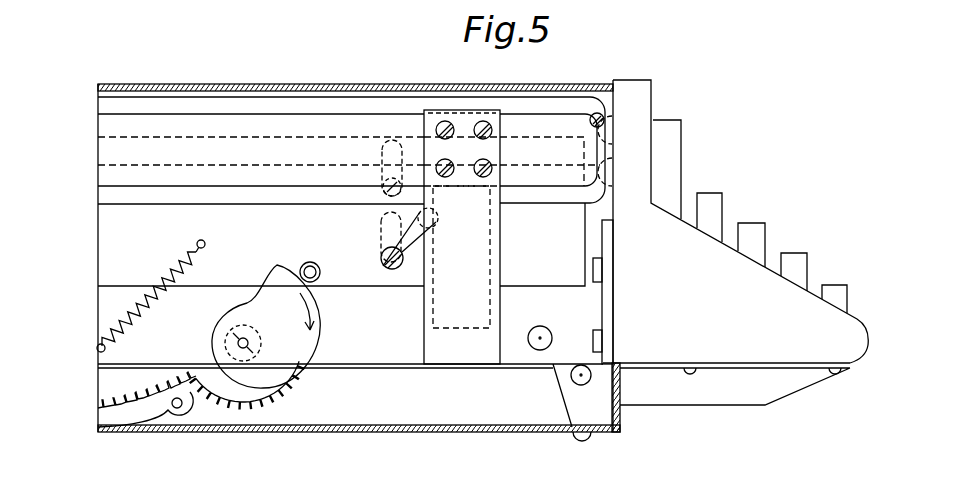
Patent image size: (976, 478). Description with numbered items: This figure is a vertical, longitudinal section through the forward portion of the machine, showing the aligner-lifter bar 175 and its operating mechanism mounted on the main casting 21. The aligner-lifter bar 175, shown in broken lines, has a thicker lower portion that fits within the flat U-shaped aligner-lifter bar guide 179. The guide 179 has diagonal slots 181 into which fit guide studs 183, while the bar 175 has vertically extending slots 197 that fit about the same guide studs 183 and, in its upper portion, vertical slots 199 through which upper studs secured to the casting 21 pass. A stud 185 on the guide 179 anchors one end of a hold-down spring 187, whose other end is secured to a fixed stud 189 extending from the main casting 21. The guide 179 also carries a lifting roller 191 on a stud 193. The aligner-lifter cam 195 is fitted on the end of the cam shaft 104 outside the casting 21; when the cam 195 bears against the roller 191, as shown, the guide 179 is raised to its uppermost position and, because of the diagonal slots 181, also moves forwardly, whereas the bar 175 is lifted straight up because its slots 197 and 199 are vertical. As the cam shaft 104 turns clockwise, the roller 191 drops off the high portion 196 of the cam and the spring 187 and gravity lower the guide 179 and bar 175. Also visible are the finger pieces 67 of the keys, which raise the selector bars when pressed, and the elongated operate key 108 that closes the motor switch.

The main casting 21 is at (113, 290).
The finger piece 67 is at (750, 225).
The cam shaft 104 is at (241, 348).
The operate key 108 is at (838, 287).
The aligner-lifter bar 175 is at (557, 135).
The aligner-lifter bar guide 179 is at (563, 246).
The diagonal slots 181 is at (412, 263).
The guide studs 183 is at (386, 270).
The stud 185 is at (199, 241).
The hold-down spring 187 is at (163, 297).
The fixed stud 189 is at (104, 348).
The lifting roller 191 is at (313, 266).
The stud 193 is at (306, 265).
The aligner-lifter cam 195 is at (291, 382).
The high portion of the cam 196 is at (283, 268).
The vertically extending slots 197 is at (381, 226).
The vertical slots 199 is at (393, 138).